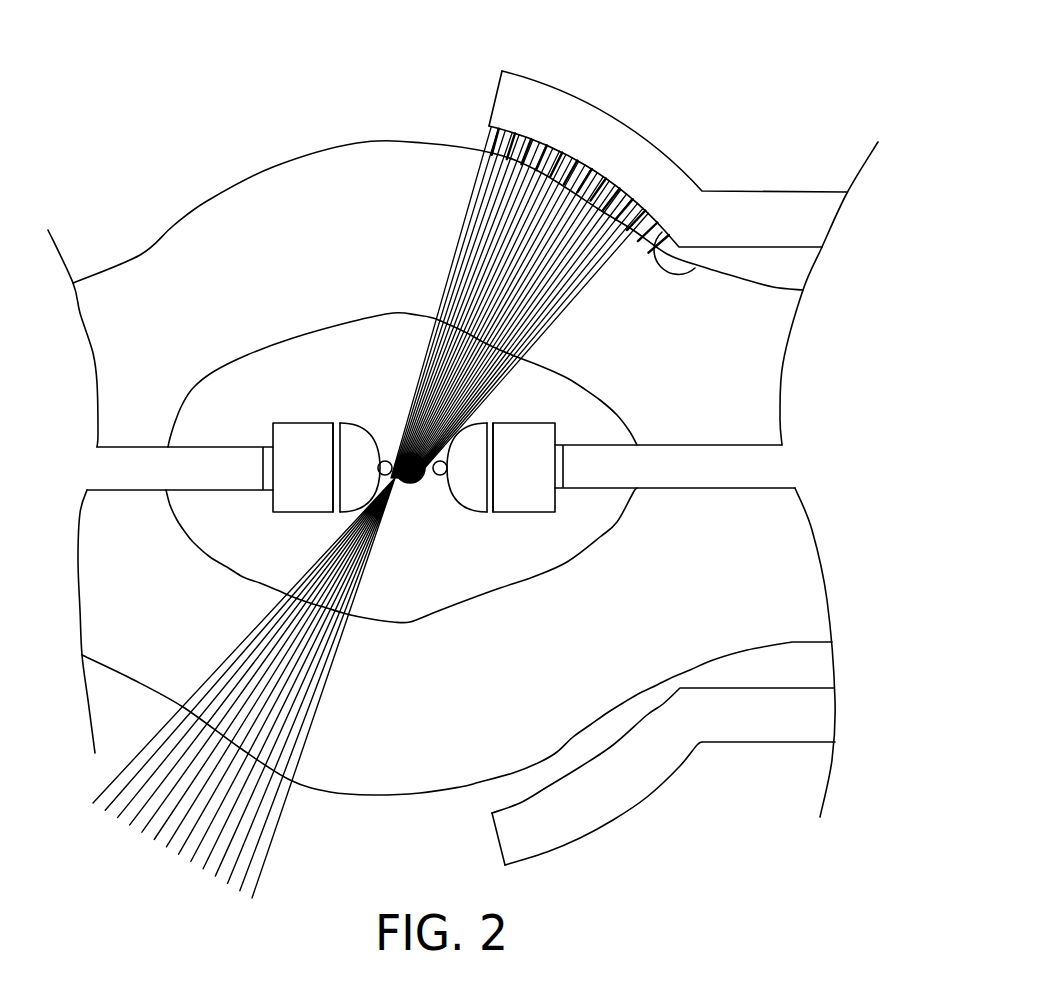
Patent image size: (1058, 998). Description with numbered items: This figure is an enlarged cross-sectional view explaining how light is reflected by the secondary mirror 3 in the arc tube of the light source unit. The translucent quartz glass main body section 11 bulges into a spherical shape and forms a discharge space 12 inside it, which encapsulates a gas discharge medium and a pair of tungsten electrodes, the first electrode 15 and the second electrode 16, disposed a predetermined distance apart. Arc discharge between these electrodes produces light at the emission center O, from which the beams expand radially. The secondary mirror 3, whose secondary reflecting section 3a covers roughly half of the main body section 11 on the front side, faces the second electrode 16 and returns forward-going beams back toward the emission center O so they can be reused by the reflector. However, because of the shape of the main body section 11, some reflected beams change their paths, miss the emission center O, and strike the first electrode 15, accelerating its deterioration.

The secondary mirror 3 is at (622, 148).
The secondary reflecting section 3a is at (693, 268).
The main body section 11 is at (140, 300).
The discharge space 12 is at (333, 363).
The first electrode 15 is at (203, 467).
The second electrode 16 is at (597, 465).
The emission center O is at (413, 482).